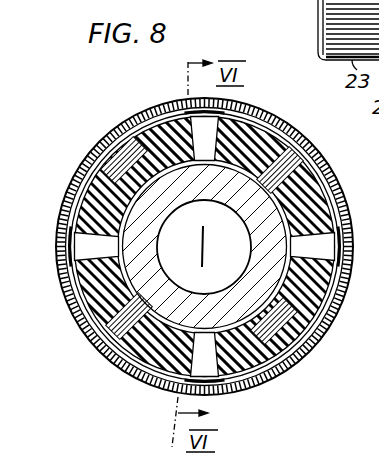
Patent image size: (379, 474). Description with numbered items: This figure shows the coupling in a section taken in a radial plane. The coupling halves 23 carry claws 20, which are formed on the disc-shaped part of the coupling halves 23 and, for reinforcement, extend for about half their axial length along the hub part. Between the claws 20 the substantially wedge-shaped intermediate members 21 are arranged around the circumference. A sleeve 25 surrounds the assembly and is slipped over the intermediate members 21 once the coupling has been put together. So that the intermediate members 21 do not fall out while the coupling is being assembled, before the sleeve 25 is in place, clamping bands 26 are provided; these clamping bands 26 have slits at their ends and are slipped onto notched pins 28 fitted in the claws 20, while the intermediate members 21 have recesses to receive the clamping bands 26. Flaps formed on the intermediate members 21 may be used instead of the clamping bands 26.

The claws 20 is at (92, 253).
The intermediate members 21 is at (76, 188).
The coupling halves 23 is at (265, 248).
The sleeve 25 is at (333, 174).
The clamping bands 26 is at (327, 205).
The notched pins 28 is at (300, 343).